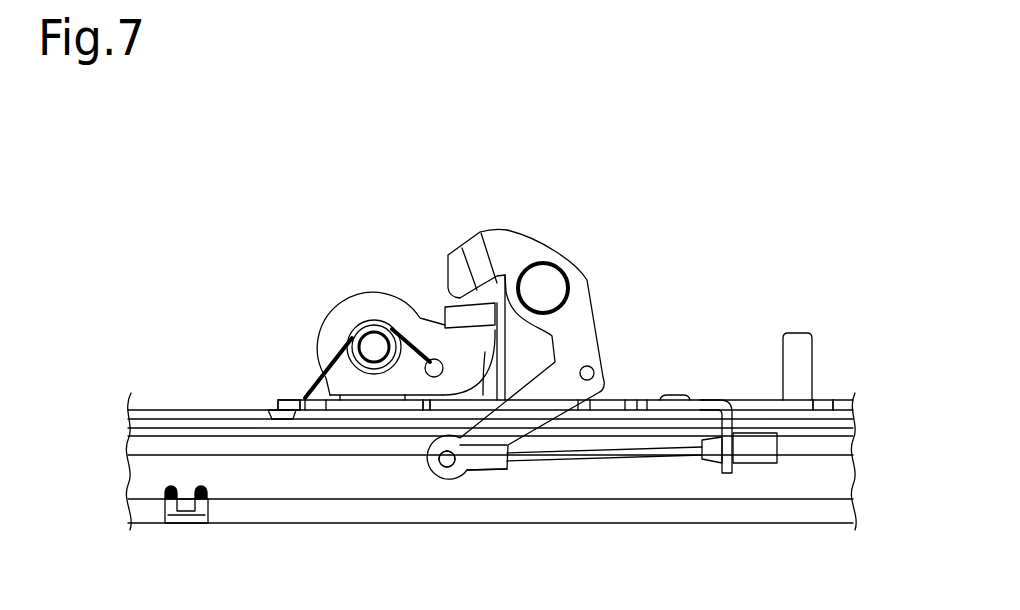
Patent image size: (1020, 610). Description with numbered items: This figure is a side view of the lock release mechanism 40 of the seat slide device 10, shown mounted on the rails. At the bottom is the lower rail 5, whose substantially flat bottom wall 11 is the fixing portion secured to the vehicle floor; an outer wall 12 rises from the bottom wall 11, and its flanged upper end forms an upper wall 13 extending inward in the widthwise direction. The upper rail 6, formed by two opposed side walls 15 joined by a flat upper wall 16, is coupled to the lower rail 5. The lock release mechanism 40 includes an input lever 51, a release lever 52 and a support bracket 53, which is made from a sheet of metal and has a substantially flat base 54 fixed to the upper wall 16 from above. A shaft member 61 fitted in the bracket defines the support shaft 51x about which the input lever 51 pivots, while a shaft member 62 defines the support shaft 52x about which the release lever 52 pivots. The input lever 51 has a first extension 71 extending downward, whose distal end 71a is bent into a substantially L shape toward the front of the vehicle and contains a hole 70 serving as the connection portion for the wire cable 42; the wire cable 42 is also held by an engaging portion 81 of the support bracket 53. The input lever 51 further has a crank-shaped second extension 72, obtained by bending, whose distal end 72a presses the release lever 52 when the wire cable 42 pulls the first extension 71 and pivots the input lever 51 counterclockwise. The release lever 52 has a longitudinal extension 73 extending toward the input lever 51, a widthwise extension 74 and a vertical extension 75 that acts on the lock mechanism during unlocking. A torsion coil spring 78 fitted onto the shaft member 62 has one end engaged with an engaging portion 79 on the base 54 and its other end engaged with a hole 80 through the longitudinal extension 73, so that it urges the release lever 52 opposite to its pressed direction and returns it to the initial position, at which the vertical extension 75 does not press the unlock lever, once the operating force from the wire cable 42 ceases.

The seat slide device 10 is at (452, 332).
The lock release mechanism 40 is at (163, 148).
The upper rail 6 is at (489, 375).
The upper wall 16 is at (128, 404).
The side walls 15 is at (129, 430).
The upper walls 13 is at (853, 428).
The outer wall 12 is at (129, 478).
The lower rail 5 is at (490, 536).
The bottom wall 11 is at (239, 525).
The base 54 is at (755, 400).
The support bracket 53 is at (833, 400).
The release lever 52 is at (322, 332).
The shaft member 62 is at (294, 337).
The support shaft 52x is at (345, 301).
The torsion coil spring 78 is at (369, 318).
The engaging portion 79 is at (284, 400).
The widthwise extension 74 is at (447, 311).
The vertical extension 75 is at (481, 391).
The longitudinal extension 73 is at (500, 338).
The input lever 51 is at (544, 328).
The first extension 71 is at (598, 353).
The second extension 72 is at (442, 236).
The distal end 72a is at (465, 294).
The shaft member 61 is at (615, 288).
The support shaft 51x is at (548, 290).
The hole 70 is at (445, 472).
The distal end 71a is at (460, 478).
The hole 80 is at (407, 395).
The wire cable 42 is at (604, 462).
The engaging portion 81 is at (728, 474).